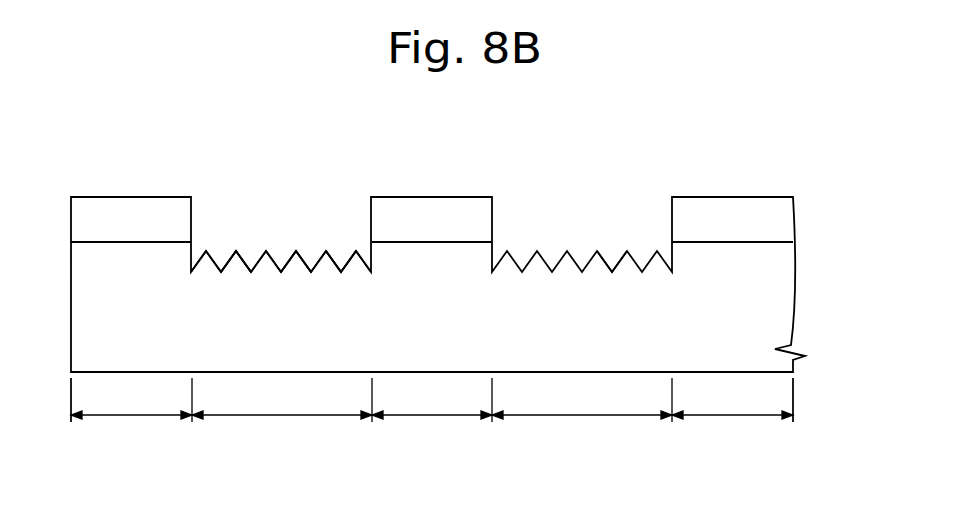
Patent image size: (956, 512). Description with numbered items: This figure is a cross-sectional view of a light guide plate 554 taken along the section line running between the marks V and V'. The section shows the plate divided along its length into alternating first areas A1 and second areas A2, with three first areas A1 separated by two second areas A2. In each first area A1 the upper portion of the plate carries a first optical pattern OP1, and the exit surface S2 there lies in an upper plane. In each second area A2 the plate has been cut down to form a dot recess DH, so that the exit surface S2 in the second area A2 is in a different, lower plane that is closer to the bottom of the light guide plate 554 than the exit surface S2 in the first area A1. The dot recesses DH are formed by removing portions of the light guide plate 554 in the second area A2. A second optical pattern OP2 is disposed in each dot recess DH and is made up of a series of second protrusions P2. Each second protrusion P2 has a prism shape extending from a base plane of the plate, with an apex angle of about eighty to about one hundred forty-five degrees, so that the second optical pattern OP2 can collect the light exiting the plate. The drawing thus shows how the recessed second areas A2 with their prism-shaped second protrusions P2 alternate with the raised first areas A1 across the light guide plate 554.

The light guide plate 554 is at (707, 168).
The exit surface S2 is at (109, 195).
The first optical pattern OP1 is at (139, 205).
The second optical pattern OP2 is at (299, 196).
The second protrusion P2 is at (240, 254).
The dot recess DH is at (343, 253).
The first area A1 is at (432, 424).
The second area A2 is at (432, 424).
The section line V is at (75, 421).
The section line V' is at (799, 421).